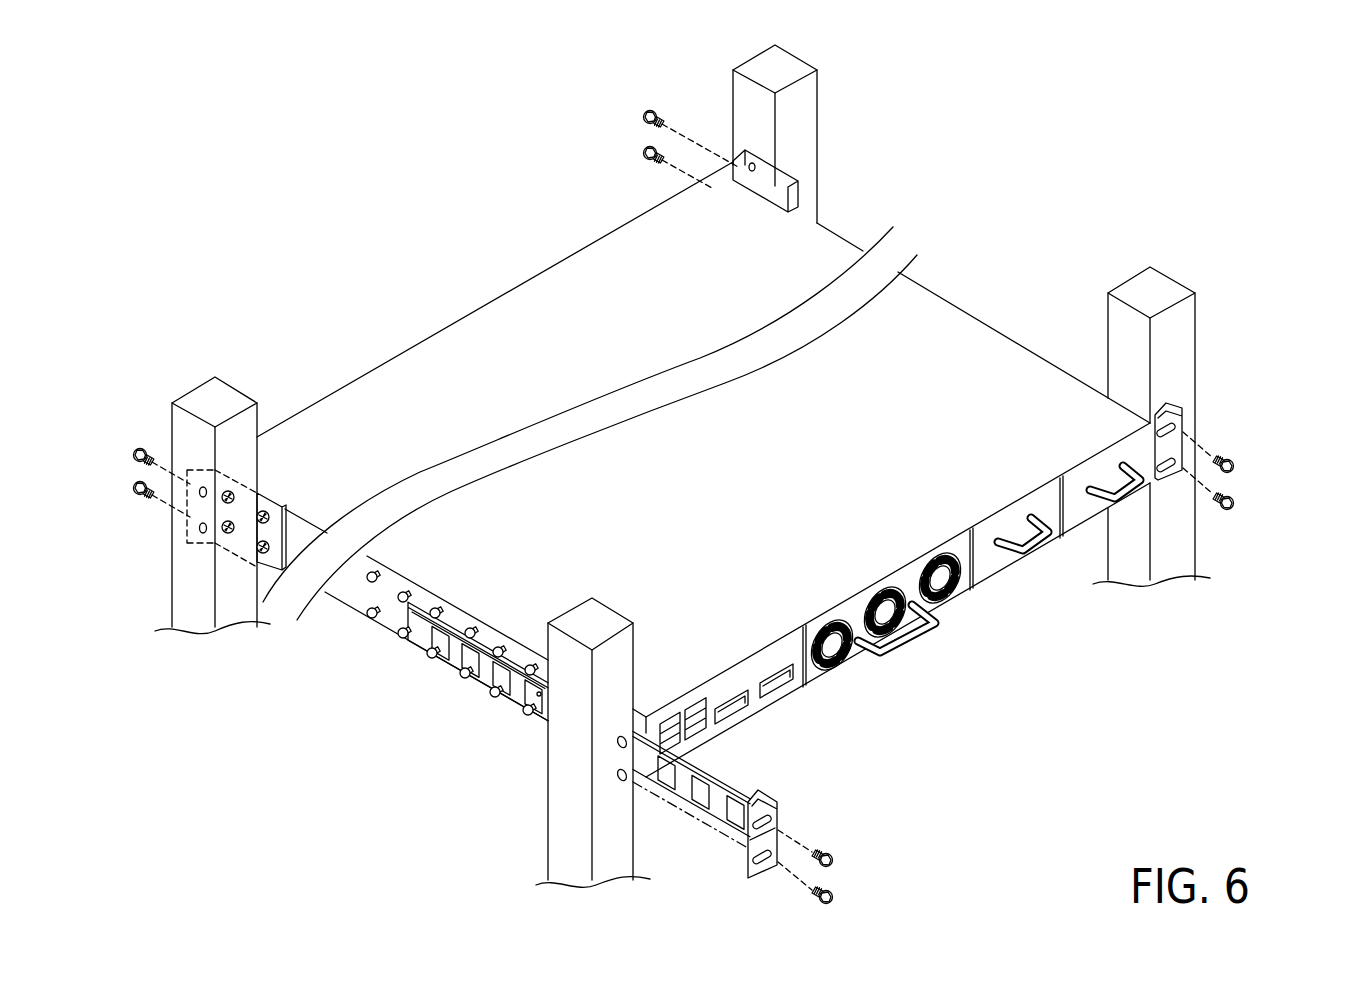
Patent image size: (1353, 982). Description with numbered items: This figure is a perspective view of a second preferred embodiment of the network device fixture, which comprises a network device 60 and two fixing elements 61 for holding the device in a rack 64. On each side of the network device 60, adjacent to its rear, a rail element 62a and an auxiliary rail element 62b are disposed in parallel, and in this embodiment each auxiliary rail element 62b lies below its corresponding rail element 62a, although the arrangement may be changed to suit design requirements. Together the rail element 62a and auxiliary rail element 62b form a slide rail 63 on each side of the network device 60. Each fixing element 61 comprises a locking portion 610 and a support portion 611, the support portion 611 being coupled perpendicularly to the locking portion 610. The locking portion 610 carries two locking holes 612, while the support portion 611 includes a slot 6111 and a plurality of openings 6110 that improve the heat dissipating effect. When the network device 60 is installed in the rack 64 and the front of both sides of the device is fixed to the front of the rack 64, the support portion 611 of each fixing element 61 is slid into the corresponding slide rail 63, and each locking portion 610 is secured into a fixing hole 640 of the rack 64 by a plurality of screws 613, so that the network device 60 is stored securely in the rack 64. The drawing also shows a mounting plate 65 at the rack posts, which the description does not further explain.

The network device 60 is at (988, 350).
The fixing element 61 is at (795, 794).
The locking portion 610 is at (748, 856).
The support portion 611 is at (720, 788).
The openings 6110 is at (530, 708).
The slot 6111 is at (427, 626).
The locking holes 612 is at (771, 816).
The screws 613 is at (846, 899).
The rail element 62a is at (461, 634).
The auxiliary rail element 62b is at (467, 688).
The slide rail 63 is at (372, 601).
The rack 64 is at (210, 396).
The fixing hole 640 is at (618, 777).
The mounting plate 65 is at (267, 494).